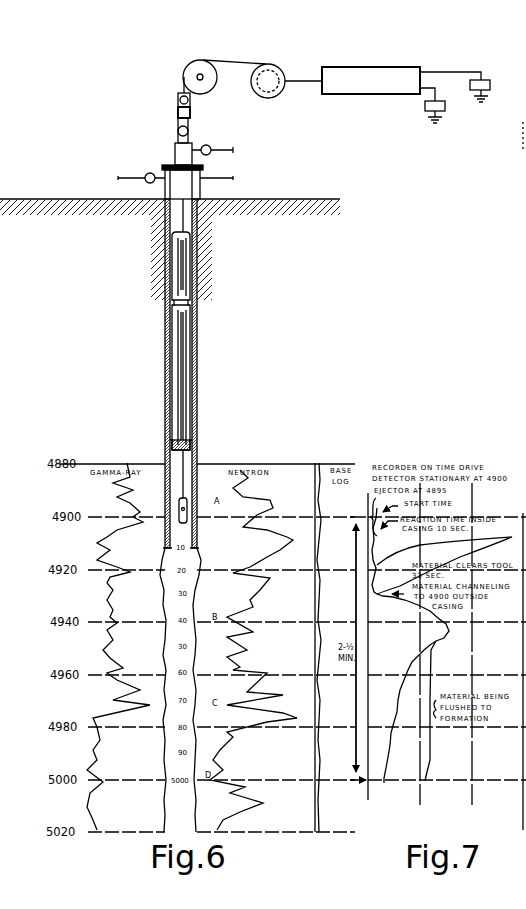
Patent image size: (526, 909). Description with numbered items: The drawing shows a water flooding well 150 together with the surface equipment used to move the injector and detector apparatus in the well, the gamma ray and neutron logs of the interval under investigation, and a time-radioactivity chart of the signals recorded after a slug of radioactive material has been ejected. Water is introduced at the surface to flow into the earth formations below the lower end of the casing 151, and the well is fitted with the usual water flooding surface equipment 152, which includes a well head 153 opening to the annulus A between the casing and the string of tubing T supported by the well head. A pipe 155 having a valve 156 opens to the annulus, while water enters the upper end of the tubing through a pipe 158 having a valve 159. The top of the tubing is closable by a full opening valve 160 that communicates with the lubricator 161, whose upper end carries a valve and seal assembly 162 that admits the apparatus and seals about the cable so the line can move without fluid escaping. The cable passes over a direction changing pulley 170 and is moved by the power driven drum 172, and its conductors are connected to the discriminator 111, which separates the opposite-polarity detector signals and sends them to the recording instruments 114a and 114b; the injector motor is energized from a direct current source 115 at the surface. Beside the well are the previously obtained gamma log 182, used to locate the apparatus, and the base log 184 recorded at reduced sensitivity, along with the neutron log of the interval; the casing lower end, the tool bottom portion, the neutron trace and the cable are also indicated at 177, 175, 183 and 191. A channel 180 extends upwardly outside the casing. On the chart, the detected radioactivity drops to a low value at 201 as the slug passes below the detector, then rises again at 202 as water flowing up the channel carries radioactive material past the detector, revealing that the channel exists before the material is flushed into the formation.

In FIG. 6, the discriminator 111 is at (362, 95).
In FIG. 6, the recording instrument 114a is at (446, 107).
In FIG. 6, the recording instrument 114b is at (481, 79).
In FIG. 6, the direct current source 115 is at (520, 155).
In FIG. 6, the well 150 is at (217, 462).
In FIG. 6, the casing 151 is at (197, 390).
In FIG. 6, the water flooding surface equipment 152 is at (243, 168).
In FIG. 6, the well head 153 is at (167, 181).
In FIG. 6, the pipe 155 is at (130, 173).
In FIG. 6, the valve 156 is at (149, 170).
In FIG. 6, the pipe 158 is at (233, 150).
In FIG. 6, the valve 159 is at (207, 145).
In FIG. 6, the full opening valve 160 is at (178, 130).
In FIG. 6, the lubricator 161 is at (178, 113).
In FIG. 6, the valve and seal assembly 162 is at (178, 101).
In FIG. 6, the direction changing pulley 170 is at (188, 68).
In FIG. 6, the power driven drum 172 is at (283, 68).
In FIG. 6, the tool bottom section 175 is at (195, 420).
In FIG. 6, the casing shoe 177 is at (165, 548).
In FIG. 6, the channel 180 is at (198, 518).
In FIG. 6, the gamma log 182 is at (88, 752).
In FIG. 6, the neutron log curve 183 is at (263, 804).
In FIG. 6, the base log 184 is at (320, 810).
In FIG. 6, the cable 191 is at (248, 62).
In FIG. 7, the low radioactivity indication 201 is at (374, 572).
In FIG. 7, the increased radioactivity indication 202 is at (440, 637).
In FIG. 6, the string of tubing T is at (200, 270).
In FIG. 6, the annulus A is at (192, 356).